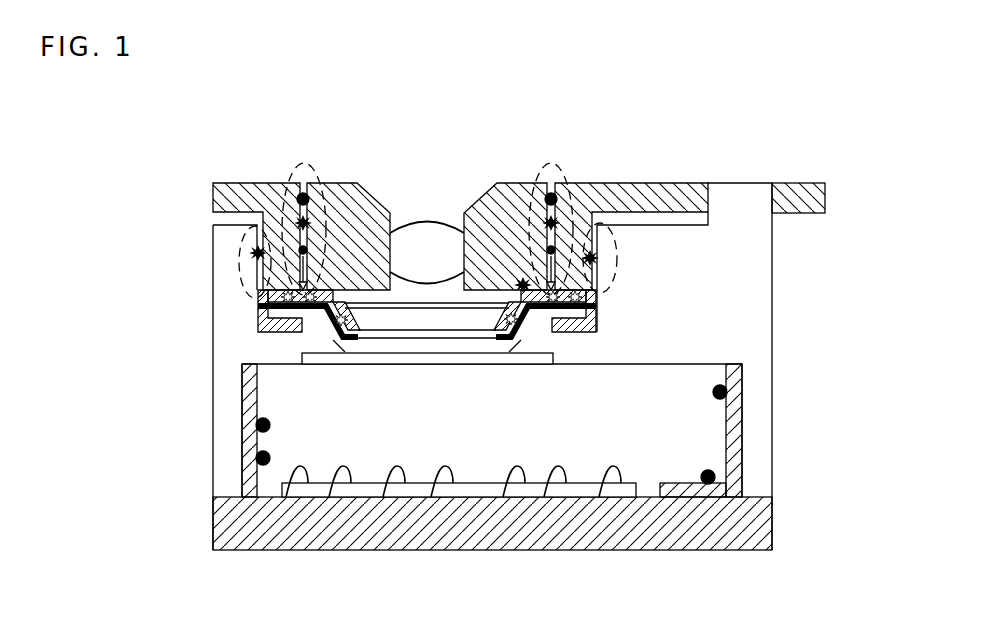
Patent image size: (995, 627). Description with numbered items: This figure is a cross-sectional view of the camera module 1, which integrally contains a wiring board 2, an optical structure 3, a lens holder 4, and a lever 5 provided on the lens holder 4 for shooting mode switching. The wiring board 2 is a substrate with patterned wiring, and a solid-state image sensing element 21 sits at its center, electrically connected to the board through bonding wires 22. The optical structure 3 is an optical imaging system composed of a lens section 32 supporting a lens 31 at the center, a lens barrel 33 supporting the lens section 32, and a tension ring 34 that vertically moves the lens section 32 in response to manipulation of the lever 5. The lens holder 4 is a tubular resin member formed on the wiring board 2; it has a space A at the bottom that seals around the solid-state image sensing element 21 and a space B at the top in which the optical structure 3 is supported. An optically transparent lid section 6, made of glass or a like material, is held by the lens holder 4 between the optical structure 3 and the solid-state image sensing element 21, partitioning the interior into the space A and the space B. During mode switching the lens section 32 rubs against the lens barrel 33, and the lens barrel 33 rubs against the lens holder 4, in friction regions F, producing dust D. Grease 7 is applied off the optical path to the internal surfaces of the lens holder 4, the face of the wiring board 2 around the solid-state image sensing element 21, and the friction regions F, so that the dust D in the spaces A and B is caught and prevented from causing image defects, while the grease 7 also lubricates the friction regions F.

The camera module 1 is at (758, 134).
The wiring board 2 is at (770, 523).
The optical structure 3 is at (635, 111).
The lens holder 4 is at (757, 322).
The lever 5 is at (803, 190).
The transparent lid section 6 is at (433, 357).
The grease 7 is at (277, 335).
The solid-state image sensing element 21 is at (585, 490).
The bonding wires 22 is at (520, 467).
The lens 31 is at (453, 240).
The lens section 32 is at (513, 183).
The lens barrel 33 is at (620, 192).
The tension ring 34 is at (352, 290).
The space A is at (688, 432).
The space B is at (377, 297).
The dust D is at (303, 193).
The friction region F is at (293, 173).